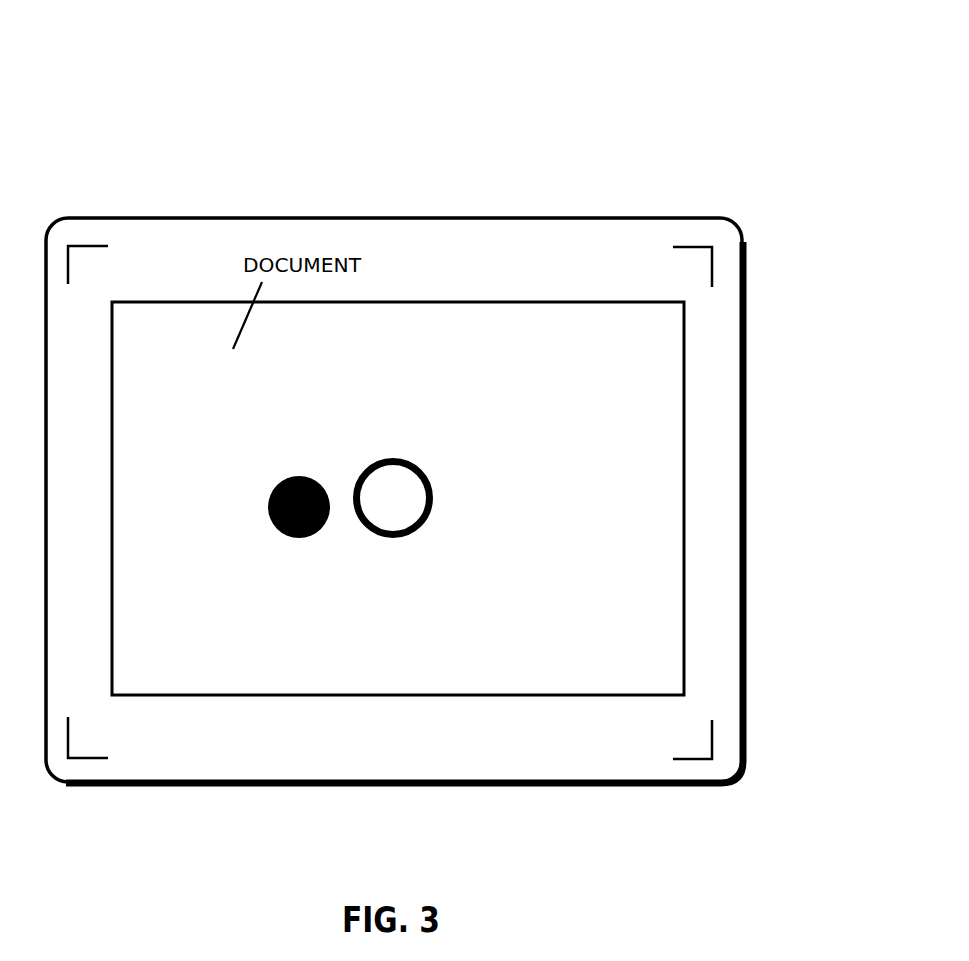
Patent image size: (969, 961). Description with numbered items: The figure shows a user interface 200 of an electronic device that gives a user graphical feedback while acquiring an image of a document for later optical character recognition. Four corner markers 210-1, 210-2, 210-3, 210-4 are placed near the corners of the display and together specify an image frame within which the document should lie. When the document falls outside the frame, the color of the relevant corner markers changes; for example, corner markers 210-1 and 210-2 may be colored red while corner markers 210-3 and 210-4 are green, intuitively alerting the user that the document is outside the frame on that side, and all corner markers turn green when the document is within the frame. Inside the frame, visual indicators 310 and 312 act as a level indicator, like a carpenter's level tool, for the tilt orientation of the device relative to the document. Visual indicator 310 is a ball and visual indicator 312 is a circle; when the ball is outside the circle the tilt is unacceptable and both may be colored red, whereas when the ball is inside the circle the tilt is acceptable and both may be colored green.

The user interface 200 is at (676, 49).
The corner marker 210-1 is at (84, 245).
The corner marker 210-2 is at (82, 758).
The corner marker 210-3 is at (696, 247).
The corner marker 210-4 is at (691, 758).
The visual indicator 310 is at (280, 483).
The visual indicator 312 is at (403, 458).